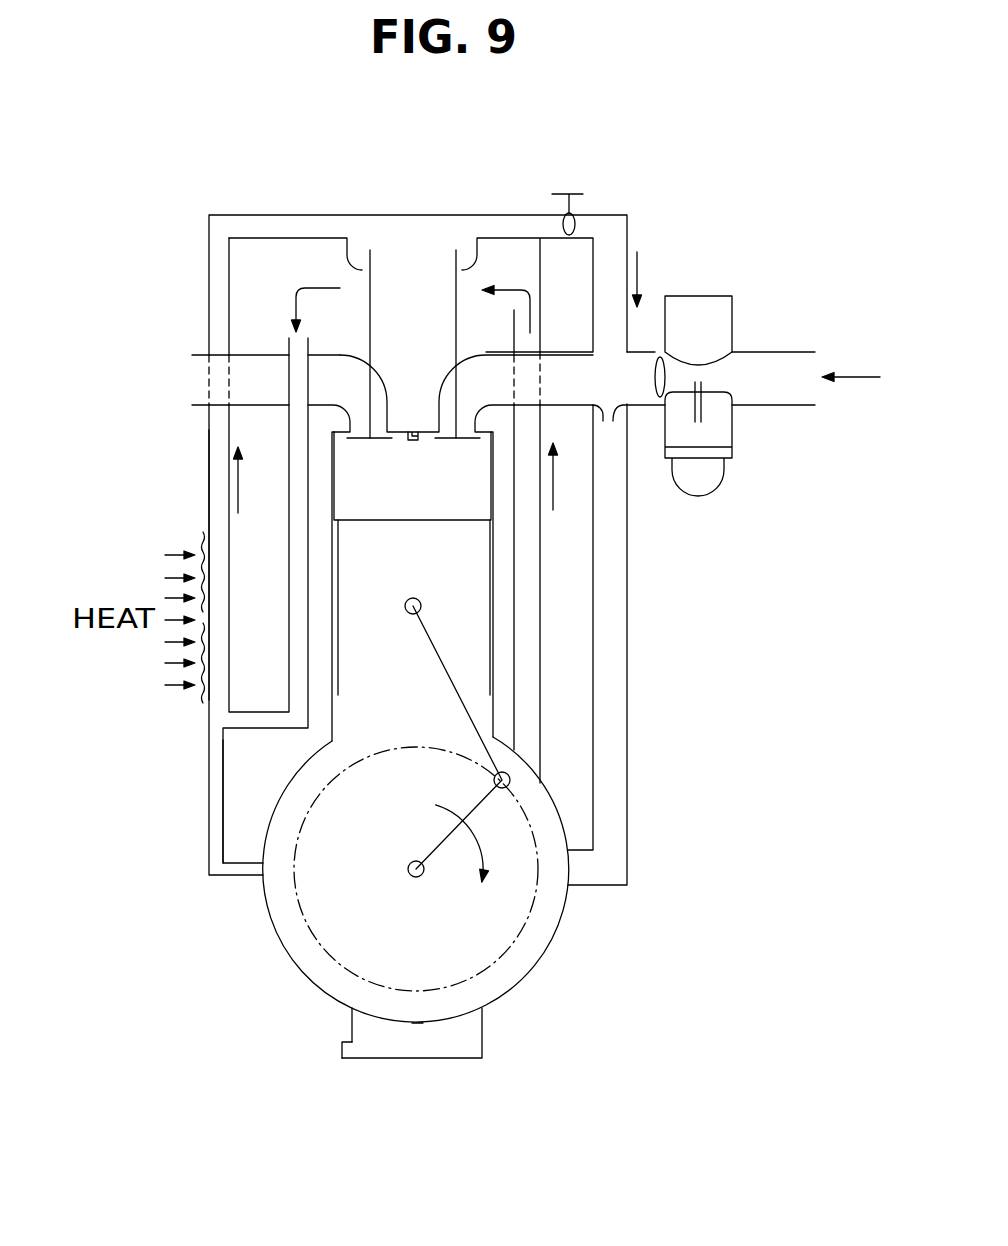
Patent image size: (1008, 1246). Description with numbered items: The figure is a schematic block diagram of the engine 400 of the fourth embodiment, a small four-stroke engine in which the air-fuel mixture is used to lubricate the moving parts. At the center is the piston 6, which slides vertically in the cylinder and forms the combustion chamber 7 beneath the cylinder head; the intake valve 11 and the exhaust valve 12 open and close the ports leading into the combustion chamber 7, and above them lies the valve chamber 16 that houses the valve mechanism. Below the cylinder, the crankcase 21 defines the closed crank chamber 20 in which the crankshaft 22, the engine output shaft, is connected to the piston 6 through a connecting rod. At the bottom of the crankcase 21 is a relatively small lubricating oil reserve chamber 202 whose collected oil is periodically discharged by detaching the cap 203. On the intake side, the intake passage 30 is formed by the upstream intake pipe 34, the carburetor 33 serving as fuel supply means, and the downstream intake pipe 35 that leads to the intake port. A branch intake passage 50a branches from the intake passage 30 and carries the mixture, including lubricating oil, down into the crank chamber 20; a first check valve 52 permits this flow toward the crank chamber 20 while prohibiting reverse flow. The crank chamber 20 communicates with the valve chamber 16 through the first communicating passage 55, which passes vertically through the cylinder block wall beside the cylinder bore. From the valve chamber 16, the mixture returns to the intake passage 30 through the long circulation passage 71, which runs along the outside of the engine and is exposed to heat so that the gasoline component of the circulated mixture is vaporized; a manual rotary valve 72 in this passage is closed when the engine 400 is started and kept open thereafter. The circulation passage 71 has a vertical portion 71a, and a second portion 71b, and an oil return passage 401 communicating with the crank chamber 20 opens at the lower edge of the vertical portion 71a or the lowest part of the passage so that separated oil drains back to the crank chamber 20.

The engine 400 is at (204, 198).
The circulation passage 71 is at (290, 228).
The vertical portion 71a is at (212, 439).
The heat exchanger passage wall 71b is at (289, 527).
The oil return passage 401 is at (209, 826).
The exhaust valve 12 is at (347, 238).
The intake valve 11 is at (477, 238).
The valve chamber 16 is at (410, 286).
The piston 6 is at (450, 522).
The combustion chamber 7 is at (418, 501).
The first communicating passage 55 is at (528, 633).
The branch intake passage 50a is at (628, 700).
The first check valve 52 is at (607, 422).
The downstream intake pipe 35 is at (642, 407).
The manual rotary valve 72 is at (576, 192).
The intake passage 30 is at (757, 367).
The upstream intake pipe 34 is at (795, 352).
The carburetor 33 is at (747, 437).
The crankcase 21 is at (280, 948).
The crank chamber 20 is at (535, 944).
The crankshaft 22 is at (410, 866).
The lubricating oil reserve chamber 202 is at (460, 1037).
The cap 203 is at (341, 1047).